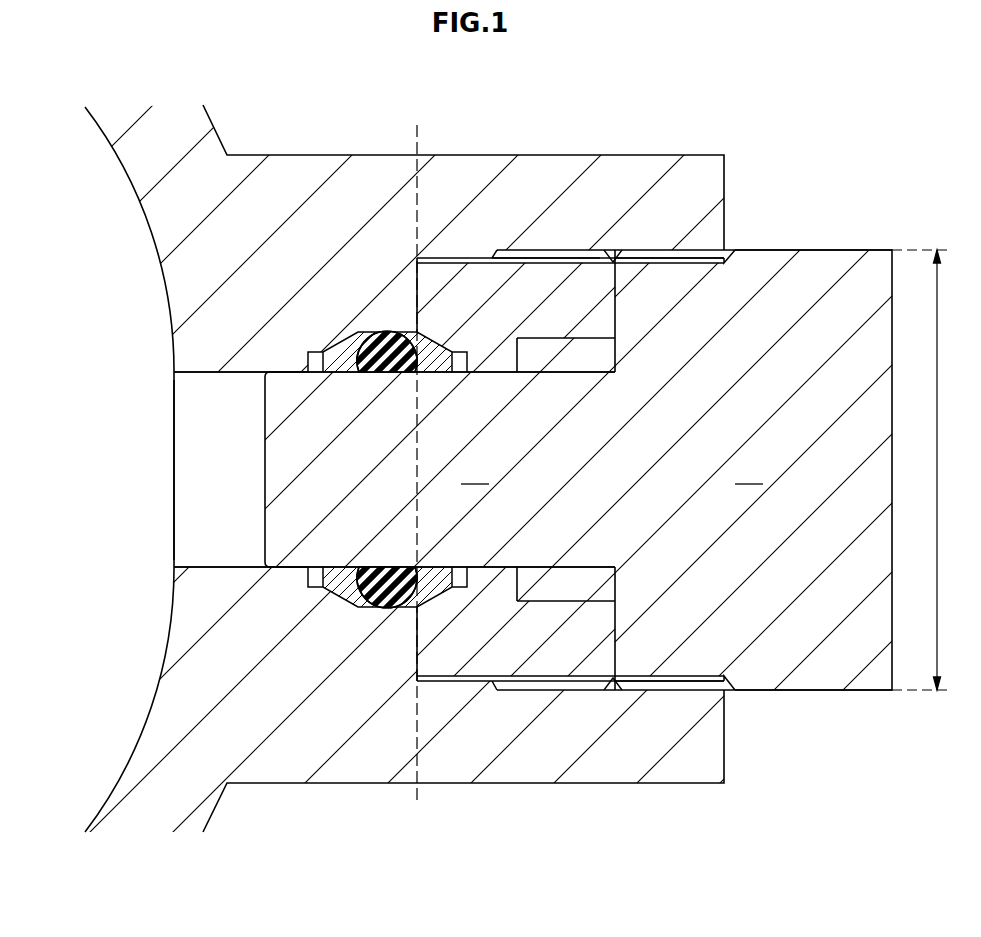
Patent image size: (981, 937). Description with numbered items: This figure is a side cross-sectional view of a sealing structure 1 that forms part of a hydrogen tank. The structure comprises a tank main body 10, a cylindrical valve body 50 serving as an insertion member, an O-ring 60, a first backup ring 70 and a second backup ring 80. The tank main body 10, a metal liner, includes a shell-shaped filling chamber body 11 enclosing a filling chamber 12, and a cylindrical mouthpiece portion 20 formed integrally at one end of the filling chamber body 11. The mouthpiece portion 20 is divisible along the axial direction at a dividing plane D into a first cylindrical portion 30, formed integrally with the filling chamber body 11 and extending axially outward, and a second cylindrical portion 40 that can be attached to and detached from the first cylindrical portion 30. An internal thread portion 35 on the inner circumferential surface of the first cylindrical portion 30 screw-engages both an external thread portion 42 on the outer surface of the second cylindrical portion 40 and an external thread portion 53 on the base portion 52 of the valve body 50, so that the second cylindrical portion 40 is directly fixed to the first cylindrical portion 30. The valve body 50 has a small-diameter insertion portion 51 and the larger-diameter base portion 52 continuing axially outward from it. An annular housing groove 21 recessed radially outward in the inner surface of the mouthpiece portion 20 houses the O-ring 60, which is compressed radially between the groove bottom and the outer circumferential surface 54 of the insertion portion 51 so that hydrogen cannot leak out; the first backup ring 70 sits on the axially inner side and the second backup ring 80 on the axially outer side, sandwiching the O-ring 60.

The sealing structure 1 is at (813, 112).
The tank main body 10 is at (415, 83).
The filling chamber body 11 is at (212, 118).
The filling chamber 12 is at (137, 484).
The mouthpiece portion 20 is at (562, 87).
The housing groove 21 is at (490, 450).
The first cylindrical portion 30 is at (487, 155).
The internal thread portion 35 is at (633, 257).
The second cylindrical portion 40 is at (518, 254).
The external thread portion 42 is at (570, 256).
The valve body 50 is at (490, 450).
The insertion portion 51 is at (440, 469).
The base portion 52 is at (490, 450).
The external thread portion 53 is at (655, 257).
The outer circumferential surface 54 is at (284, 370).
The O-ring 60 is at (385, 338).
The first backup ring 70 is at (340, 348).
The second backup ring 80 is at (430, 347).